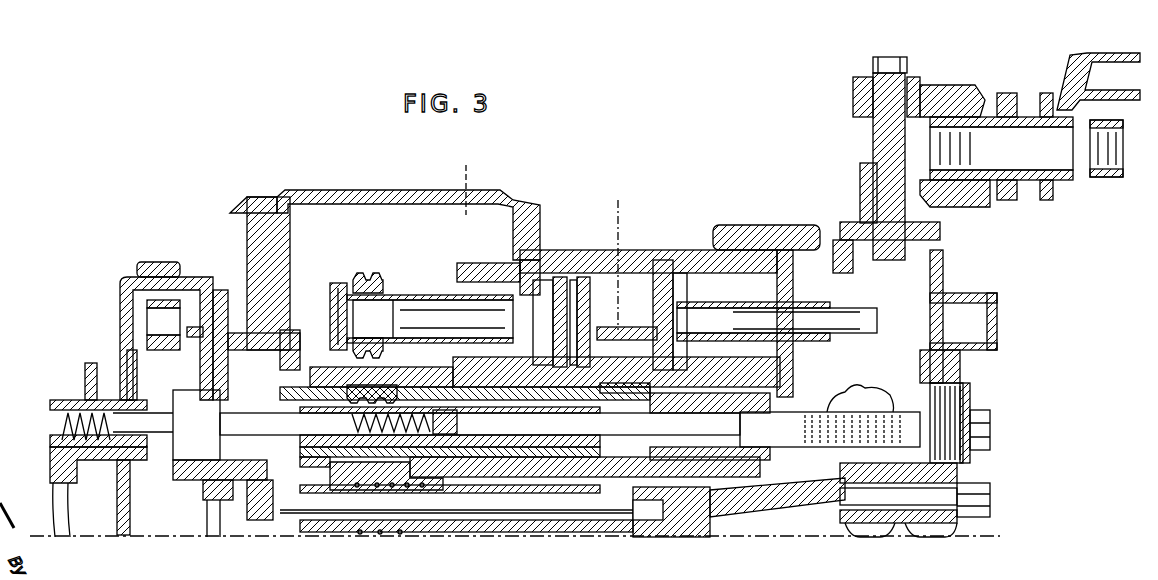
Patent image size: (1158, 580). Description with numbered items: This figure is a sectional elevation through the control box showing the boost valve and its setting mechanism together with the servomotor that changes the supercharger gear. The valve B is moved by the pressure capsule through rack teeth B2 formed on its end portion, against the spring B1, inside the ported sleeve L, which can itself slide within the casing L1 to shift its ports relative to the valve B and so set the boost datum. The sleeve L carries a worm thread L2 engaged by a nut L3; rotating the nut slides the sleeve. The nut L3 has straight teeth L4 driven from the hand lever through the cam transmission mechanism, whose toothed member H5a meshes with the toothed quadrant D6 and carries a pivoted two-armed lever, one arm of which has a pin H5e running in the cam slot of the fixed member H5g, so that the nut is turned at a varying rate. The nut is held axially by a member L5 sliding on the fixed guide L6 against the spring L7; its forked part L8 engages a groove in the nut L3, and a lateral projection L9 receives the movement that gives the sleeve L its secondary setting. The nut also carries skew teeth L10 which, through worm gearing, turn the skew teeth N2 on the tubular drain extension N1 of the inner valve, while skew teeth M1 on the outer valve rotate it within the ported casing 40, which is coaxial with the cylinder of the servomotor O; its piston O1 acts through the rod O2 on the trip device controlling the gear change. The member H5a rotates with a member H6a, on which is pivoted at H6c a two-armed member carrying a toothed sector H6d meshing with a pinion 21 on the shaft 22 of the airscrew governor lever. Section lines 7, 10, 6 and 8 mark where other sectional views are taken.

The cover cap 10 is at (372, 200).
The cap flange 7 is at (262, 200).
The cam slot member H5g is at (267, 333).
The pin H5e is at (267, 350).
The worm thread L2 is at (215, 350).
The toothed sector H6d is at (130, 370).
The pivot H6c is at (163, 317).
The cam transmission member H6a is at (157, 347).
The shaft 22 is at (82, 398).
The spring B1 is at (68, 413).
The pinion 21 is at (153, 450).
The toothed member H5a is at (260, 503).
The second toothed quadrant D6 is at (263, 507).
The spring L7 is at (270, 531).
The skew teeth L10 is at (350, 283).
The skew teeth N2 is at (367, 275).
The tubular extension N1 is at (447, 295).
The section line 6 is at (470, 160).
The skew gear teeth M1 is at (472, 283).
The ported sleeve L is at (535, 350).
The section line 8 is at (610, 200).
The ported casing 40 is at (607, 262).
The servomotor O is at (728, 268).
The casing L1 is at (718, 405).
The piston rod O2 is at (862, 320).
The piston O1 is at (685, 356).
The boost valve B is at (570, 429).
The rack teeth B2 is at (848, 427).
The fixed bar or guide L6 is at (358, 420).
The forked part L8 is at (360, 385).
The nut L3 is at (372, 360).
The sliding member L5 is at (470, 488).
The straight teeth L4 is at (320, 463).
The lateral projection L9 is at (700, 523).